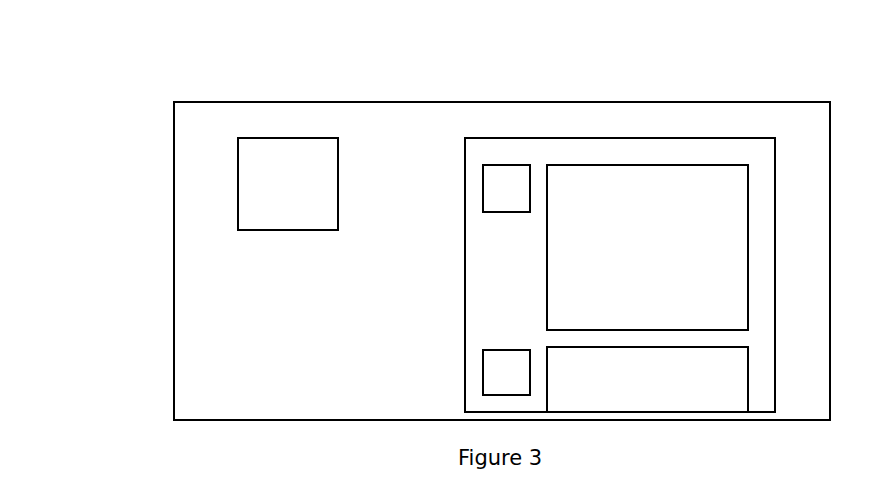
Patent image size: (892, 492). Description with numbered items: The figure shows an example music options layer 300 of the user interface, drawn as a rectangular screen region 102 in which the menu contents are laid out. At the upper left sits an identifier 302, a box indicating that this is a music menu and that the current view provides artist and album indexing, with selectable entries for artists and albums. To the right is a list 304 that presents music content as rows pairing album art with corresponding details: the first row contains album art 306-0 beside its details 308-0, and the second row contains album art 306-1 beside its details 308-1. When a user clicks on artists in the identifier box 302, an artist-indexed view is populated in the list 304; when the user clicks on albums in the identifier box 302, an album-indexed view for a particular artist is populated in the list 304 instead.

The music options layer 300 is at (168, 32).
The display 102 is at (502, 261).
The identifier 302 is at (328, 202).
The list 304 is at (480, 283).
The album art 306-0 is at (502, 200).
The album art 306-1 is at (503, 367).
The details 308-0 is at (647, 247).
The details 308-1 is at (647, 379).